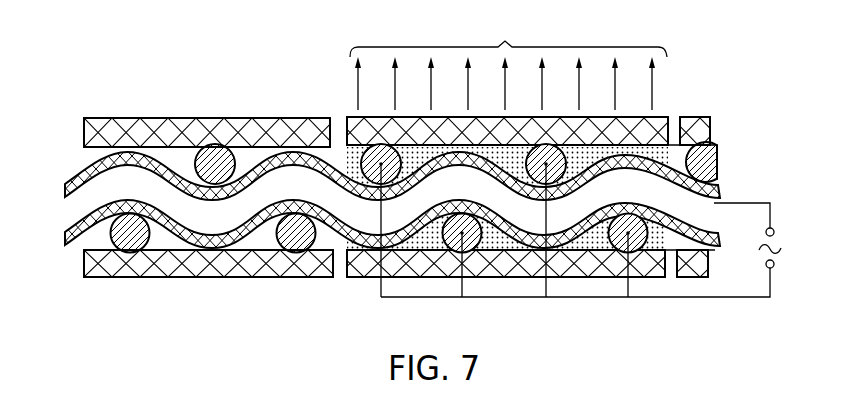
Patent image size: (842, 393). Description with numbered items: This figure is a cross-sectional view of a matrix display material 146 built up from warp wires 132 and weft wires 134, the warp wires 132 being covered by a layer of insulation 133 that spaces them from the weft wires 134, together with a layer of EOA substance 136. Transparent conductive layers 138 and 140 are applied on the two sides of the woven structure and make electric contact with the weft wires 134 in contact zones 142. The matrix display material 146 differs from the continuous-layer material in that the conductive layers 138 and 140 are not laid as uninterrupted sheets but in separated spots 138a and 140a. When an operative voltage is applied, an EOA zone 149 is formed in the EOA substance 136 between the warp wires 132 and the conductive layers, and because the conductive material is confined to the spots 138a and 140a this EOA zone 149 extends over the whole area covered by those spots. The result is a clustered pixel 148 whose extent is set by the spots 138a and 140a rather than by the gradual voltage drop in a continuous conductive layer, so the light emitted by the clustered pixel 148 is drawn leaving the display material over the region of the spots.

The warp wires 132 is at (78, 205).
The layer of insulation 133 is at (67, 193).
The weft wires 134 is at (143, 212).
The layer of EOA substance 136 is at (90, 240).
The transparent conductive layer 138 is at (123, 133).
The separated spots of conductive layer 138a is at (653, 121).
The transparent conductive layer 140 is at (128, 270).
The separated spots of conductive layer 140a is at (650, 262).
The contact zones 142 is at (422, 267).
The matrix display material 146 is at (737, 100).
The clustered pixel 148 is at (508, 61).
The EOA zone 149 is at (387, 143).